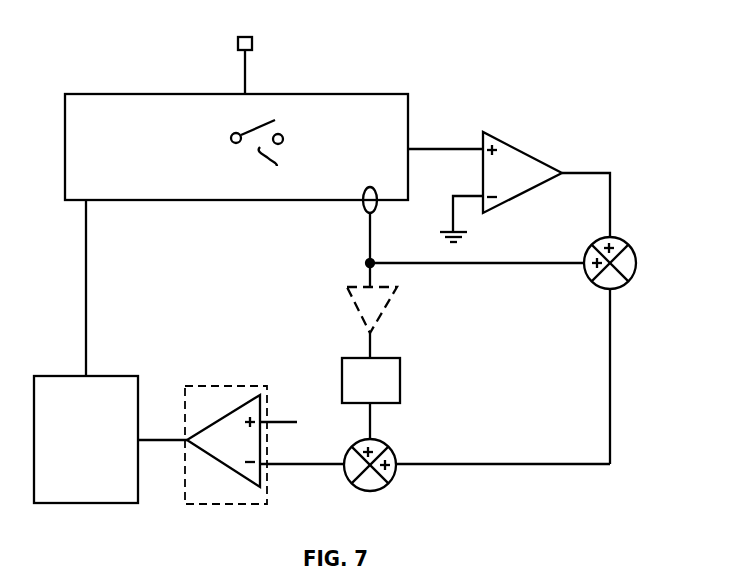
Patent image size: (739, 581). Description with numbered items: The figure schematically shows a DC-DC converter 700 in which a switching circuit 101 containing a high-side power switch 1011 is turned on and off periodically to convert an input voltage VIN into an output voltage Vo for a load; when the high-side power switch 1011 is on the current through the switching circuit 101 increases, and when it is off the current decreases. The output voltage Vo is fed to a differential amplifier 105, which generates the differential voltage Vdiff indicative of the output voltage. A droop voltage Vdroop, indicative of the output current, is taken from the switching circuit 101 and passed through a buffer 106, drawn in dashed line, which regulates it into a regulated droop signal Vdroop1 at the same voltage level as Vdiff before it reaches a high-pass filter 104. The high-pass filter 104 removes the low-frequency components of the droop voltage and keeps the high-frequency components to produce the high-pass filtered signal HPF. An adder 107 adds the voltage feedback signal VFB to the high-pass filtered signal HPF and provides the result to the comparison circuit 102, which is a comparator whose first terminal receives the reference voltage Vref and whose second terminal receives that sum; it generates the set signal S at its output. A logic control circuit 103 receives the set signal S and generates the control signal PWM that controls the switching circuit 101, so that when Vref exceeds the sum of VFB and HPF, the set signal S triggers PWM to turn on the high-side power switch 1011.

The DC-DC converter 700 is at (560, 53).
The switching circuit 101 is at (236, 113).
The high-side power switch 1011 is at (267, 156).
The differential amplifier 105 is at (501, 187).
The buffer 106 is at (387, 322).
The high-pass filter 104 is at (371, 380).
The adder 107 is at (389, 468).
The comparison circuit 102 is at (264, 445).
The logic control circuit 103 is at (86, 439).